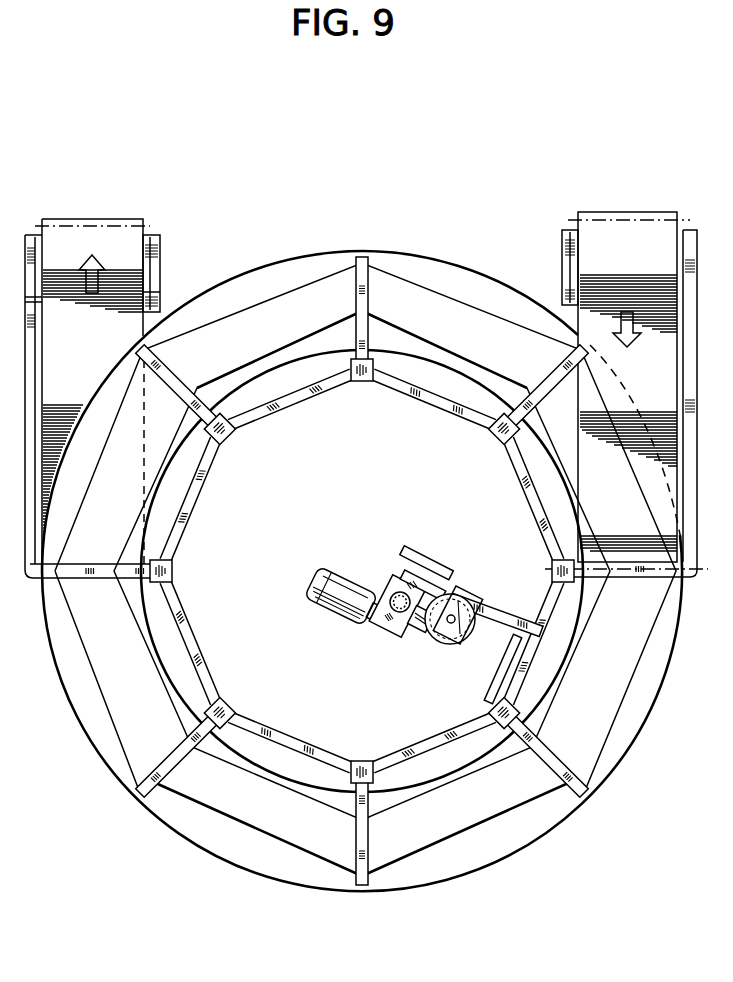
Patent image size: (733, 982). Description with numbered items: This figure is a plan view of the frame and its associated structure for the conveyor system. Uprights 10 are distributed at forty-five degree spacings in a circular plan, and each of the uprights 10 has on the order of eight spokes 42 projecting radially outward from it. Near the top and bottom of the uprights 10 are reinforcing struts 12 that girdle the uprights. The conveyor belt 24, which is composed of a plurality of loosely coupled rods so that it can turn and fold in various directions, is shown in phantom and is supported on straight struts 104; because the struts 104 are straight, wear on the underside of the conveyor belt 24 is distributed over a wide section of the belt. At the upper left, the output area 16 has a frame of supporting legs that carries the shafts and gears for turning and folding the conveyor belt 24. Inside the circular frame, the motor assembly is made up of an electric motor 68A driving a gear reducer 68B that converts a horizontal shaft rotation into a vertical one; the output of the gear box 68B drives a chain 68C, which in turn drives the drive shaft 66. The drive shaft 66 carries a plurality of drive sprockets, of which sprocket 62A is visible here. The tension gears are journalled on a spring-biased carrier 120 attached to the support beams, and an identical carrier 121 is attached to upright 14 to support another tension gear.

The uprights 10 is at (492, 424).
The reinforcing struts 12 is at (262, 431).
The upright 14 is at (396, 560).
The output area 16 is at (101, 214).
The conveyor belt 24 is at (640, 211).
The spokes 42 is at (181, 373).
The sprocket 62A is at (467, 640).
The drive shaft 66 is at (455, 603).
The electric motor 68A is at (313, 571).
The gear reducer 68B is at (385, 627).
The chain 68C is at (418, 632).
The straight struts 104 is at (121, 416).
The spring-biased carrier 120 is at (491, 689).
The carrier 121 is at (435, 558).